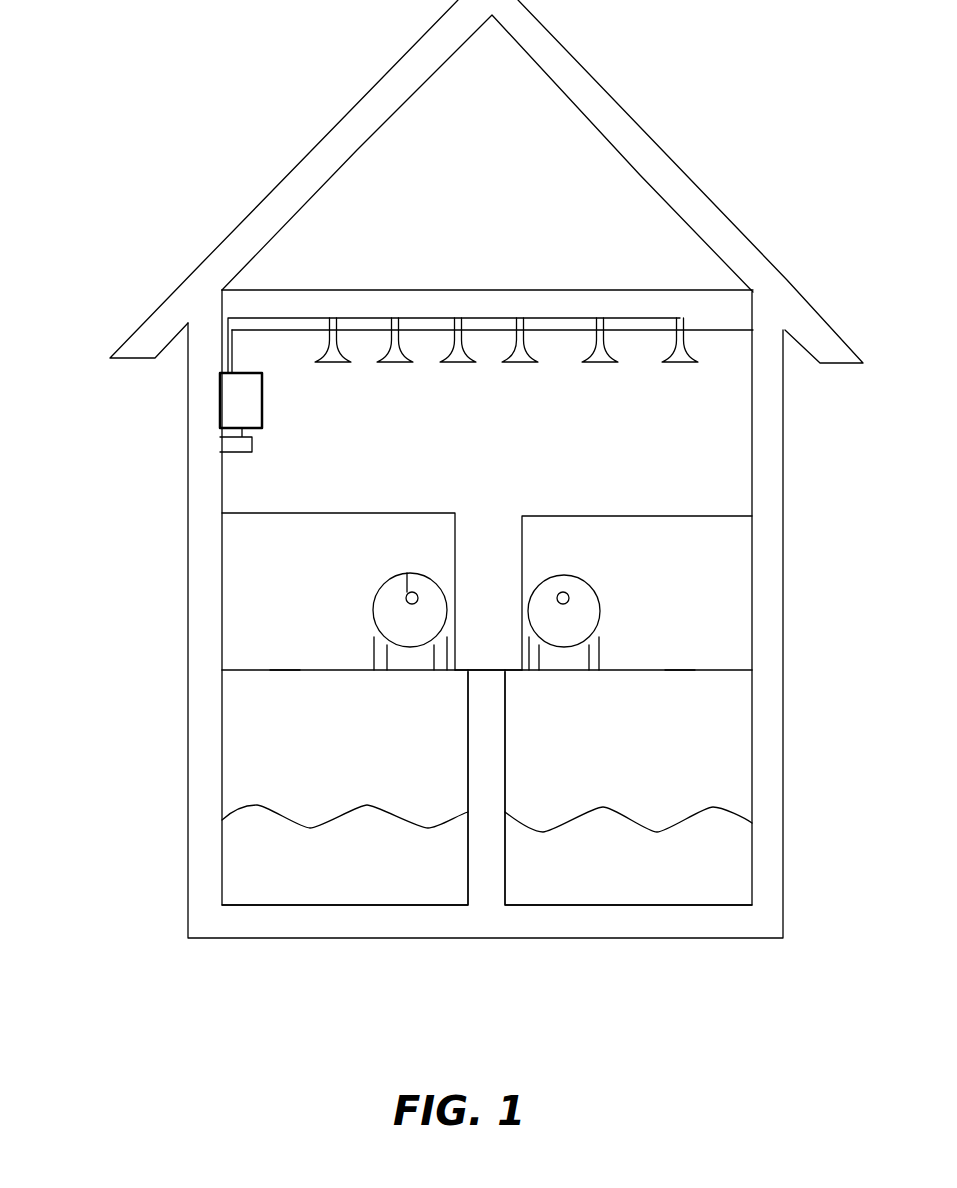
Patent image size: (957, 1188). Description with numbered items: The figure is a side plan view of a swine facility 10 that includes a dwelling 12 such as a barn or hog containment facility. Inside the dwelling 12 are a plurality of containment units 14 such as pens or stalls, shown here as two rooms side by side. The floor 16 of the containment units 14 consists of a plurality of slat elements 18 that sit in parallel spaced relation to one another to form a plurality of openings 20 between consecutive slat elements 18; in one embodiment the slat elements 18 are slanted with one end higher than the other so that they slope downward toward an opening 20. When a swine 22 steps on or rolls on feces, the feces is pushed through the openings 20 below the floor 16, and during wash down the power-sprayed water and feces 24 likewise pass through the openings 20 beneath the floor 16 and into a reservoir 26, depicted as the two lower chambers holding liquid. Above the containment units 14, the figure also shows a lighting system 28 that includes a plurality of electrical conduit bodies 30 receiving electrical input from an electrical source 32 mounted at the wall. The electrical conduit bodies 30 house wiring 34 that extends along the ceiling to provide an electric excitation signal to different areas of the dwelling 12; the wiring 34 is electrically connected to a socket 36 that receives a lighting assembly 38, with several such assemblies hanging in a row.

The swine facility 10 is at (124, 519).
The dwelling 12 is at (283, 82).
The containment units 14 is at (240, 523).
The floor 16 is at (483, 670).
The slat elements 18 is at (287, 668).
The openings 20 is at (280, 668).
The swine 22 is at (407, 572).
The water and feces 24 is at (283, 830).
The reservoir 26 is at (278, 707).
The lighting system 28 is at (434, 262).
The electrical conduit bodies 30 is at (313, 307).
The electrical source 32 is at (256, 418).
The wiring 34 is at (333, 333).
The socket 36 is at (470, 366).
The lighting assembly 38 is at (284, 343).